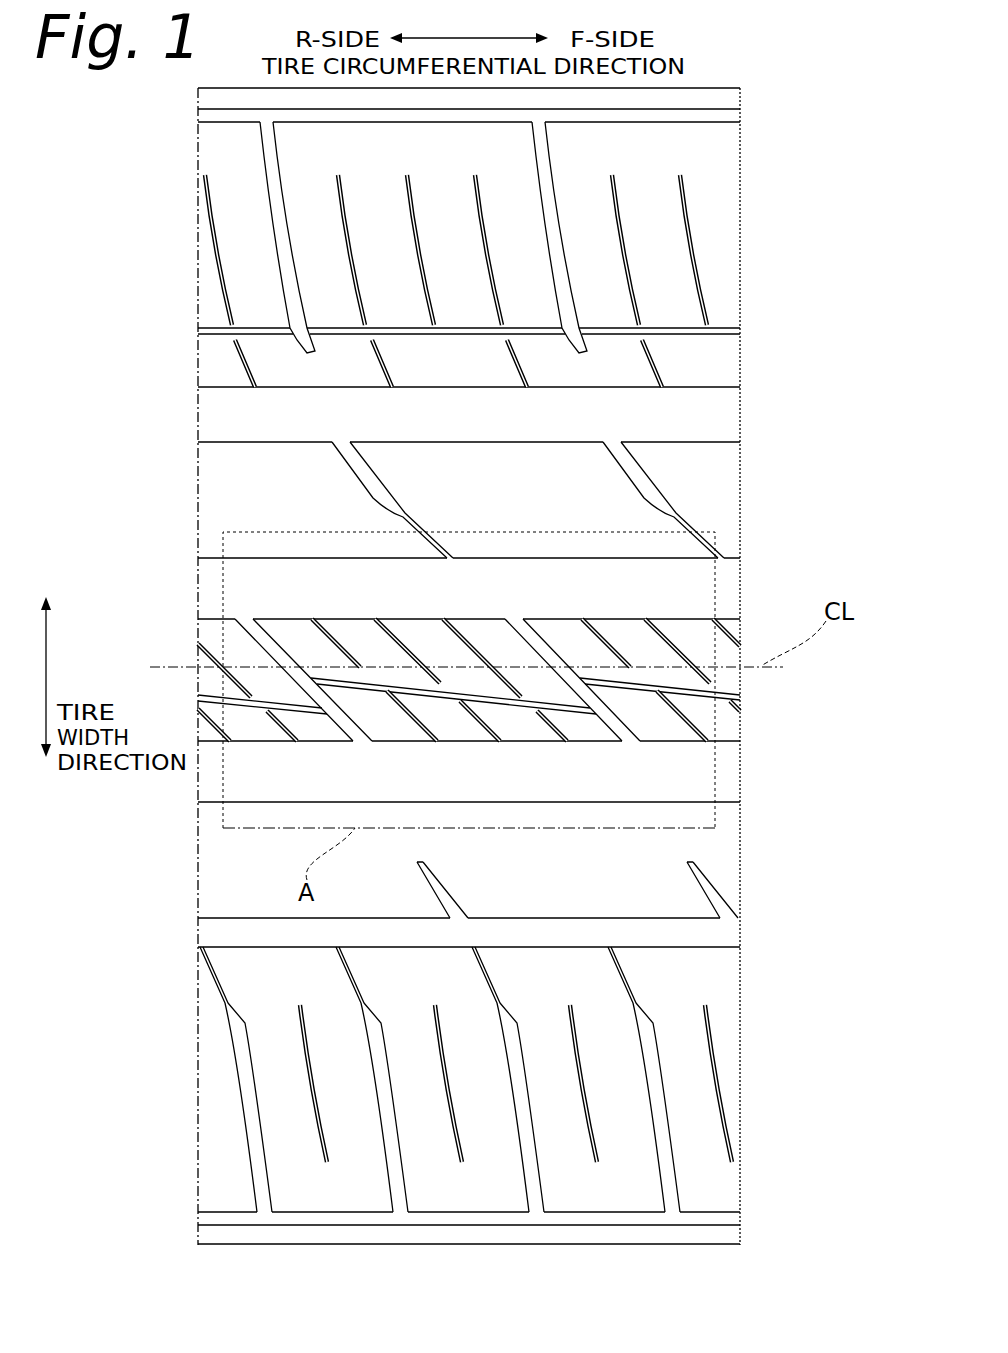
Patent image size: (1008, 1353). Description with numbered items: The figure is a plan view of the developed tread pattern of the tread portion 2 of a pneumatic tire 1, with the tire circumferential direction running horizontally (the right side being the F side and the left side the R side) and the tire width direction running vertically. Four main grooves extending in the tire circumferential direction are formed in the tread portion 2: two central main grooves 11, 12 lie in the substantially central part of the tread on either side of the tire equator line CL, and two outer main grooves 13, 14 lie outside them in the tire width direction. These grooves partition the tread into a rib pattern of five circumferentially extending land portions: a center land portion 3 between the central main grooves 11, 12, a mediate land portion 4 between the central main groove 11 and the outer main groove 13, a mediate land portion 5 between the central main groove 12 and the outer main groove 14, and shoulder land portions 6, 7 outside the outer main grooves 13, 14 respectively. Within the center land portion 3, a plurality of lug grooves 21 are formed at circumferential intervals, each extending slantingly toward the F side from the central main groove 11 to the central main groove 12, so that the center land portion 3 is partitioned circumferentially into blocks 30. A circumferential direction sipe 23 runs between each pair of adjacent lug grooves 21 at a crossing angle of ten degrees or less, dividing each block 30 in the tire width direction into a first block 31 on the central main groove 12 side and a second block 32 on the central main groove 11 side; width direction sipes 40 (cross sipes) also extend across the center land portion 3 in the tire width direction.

The pneumatic tire 1 is at (742, 82).
The tread portion 2 is at (198, 245).
The center land portion 3 is at (197, 650).
The mediate land portion 4 is at (212, 505).
The mediate land portion 5 is at (222, 880).
The shoulder land portion 6 is at (205, 302).
The shoulder land portion 7 is at (212, 1062).
The central main groove 11 is at (729, 590).
The central main groove 12 is at (722, 779).
The outer main groove 13 is at (718, 427).
The outer main groove 14 is at (727, 923).
The lug groove 21 is at (245, 617).
The circumferential direction sipe 23 is at (598, 678).
The block 30 is at (283, 621).
The first block 31 is at (648, 717).
The second block 32 is at (618, 632).
The width direction sipe 40 is at (470, 647).